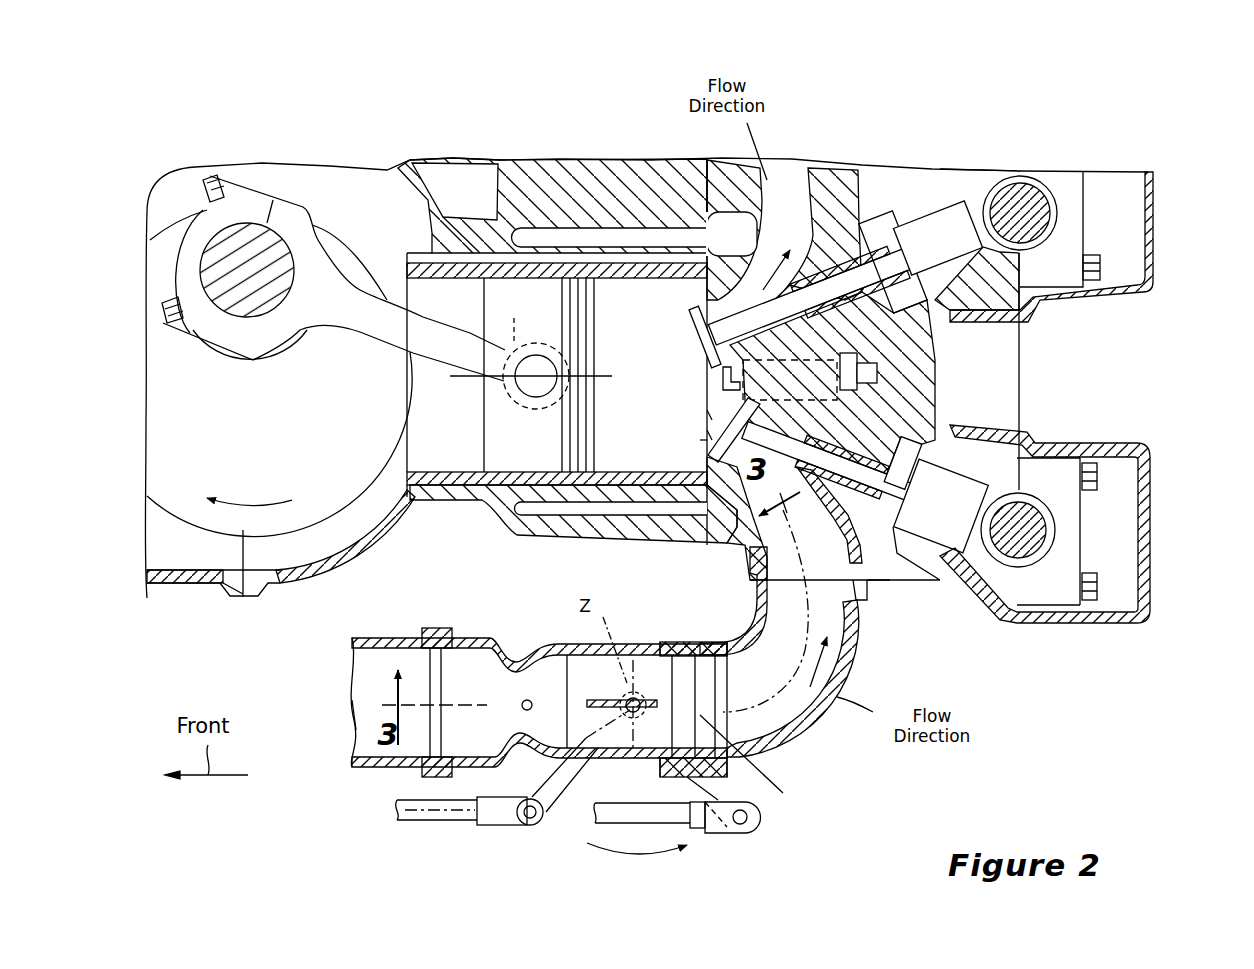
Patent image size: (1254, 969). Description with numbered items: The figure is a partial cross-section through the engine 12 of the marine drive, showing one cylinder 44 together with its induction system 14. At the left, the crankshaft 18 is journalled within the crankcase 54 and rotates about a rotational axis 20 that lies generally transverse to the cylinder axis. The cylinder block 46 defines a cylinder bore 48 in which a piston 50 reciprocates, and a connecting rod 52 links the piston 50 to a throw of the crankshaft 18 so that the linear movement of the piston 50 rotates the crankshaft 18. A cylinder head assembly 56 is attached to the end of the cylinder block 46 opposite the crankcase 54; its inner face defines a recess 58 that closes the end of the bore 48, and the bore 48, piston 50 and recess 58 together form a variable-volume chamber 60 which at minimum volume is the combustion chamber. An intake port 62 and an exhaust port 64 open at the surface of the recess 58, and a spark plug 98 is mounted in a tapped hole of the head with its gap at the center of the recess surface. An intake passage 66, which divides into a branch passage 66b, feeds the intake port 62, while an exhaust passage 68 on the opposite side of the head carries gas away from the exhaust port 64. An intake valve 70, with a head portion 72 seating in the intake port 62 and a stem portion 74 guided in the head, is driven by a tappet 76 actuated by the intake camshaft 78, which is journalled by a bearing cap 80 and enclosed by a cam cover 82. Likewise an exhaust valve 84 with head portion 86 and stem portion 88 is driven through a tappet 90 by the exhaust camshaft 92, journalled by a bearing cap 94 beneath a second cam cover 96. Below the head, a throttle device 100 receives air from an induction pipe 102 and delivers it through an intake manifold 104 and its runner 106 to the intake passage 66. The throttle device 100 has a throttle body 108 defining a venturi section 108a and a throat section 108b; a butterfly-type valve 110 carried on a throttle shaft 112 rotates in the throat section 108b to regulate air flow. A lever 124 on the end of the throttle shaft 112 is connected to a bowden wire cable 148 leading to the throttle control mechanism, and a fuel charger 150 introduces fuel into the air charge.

The engine 12 is at (1090, 718).
The induction system 14 is at (985, 772).
The crankshaft 18 is at (303, 503).
The rotational axis 20 is at (250, 376).
The cylinder 44 is at (495, 548).
The cylinder block 46 is at (637, 546).
The cylinder bore 48 is at (450, 472).
The piston 50 is at (490, 432).
The connecting rod 52 is at (363, 318).
The crankcase 54 is at (201, 586).
The cylinder head assembly 56 is at (955, 150).
The recess 58 is at (700, 455).
The variable-volume chamber 60 is at (600, 462).
The intake port 62 is at (725, 380).
The exhaust port 64 is at (698, 302).
The intake passage 66 is at (827, 557).
The branch passage 66b is at (710, 438).
The exhaust passage 68 is at (790, 180).
The intake valve 70 is at (907, 580).
The head portion 72 is at (707, 417).
The stem portion 74 is at (860, 470).
The tappet 76 is at (950, 430).
The intake camshaft 78 is at (1027, 512).
The bearing cap 80 is at (1060, 563).
The cam cover 82 is at (1150, 455).
The exhaust valve 84 is at (882, 240).
The head portion 86 is at (700, 332).
The stem portion 88 is at (848, 285).
The tappet 90 is at (983, 323).
The exhaust camshaft 92 is at (1030, 180).
The bearing cap 94 is at (1075, 203).
The second cam cover 96 is at (1155, 222).
The spark plug 98 is at (863, 380).
The throttle device 100 is at (651, 640).
The induction pipe 102 is at (360, 793).
The intake manifold 104 is at (790, 712).
The runner 106 is at (853, 653).
The throttle body 108 is at (500, 640).
The venturi section 108a is at (505, 694).
The throat section 108b is at (623, 688).
The butterfly-type valve 110 is at (754, 774).
The throttle shaft 112 is at (690, 640).
The lever 124 is at (700, 790).
The bowden wire cable 148 is at (720, 832).
The fuel charger 150 is at (517, 780).